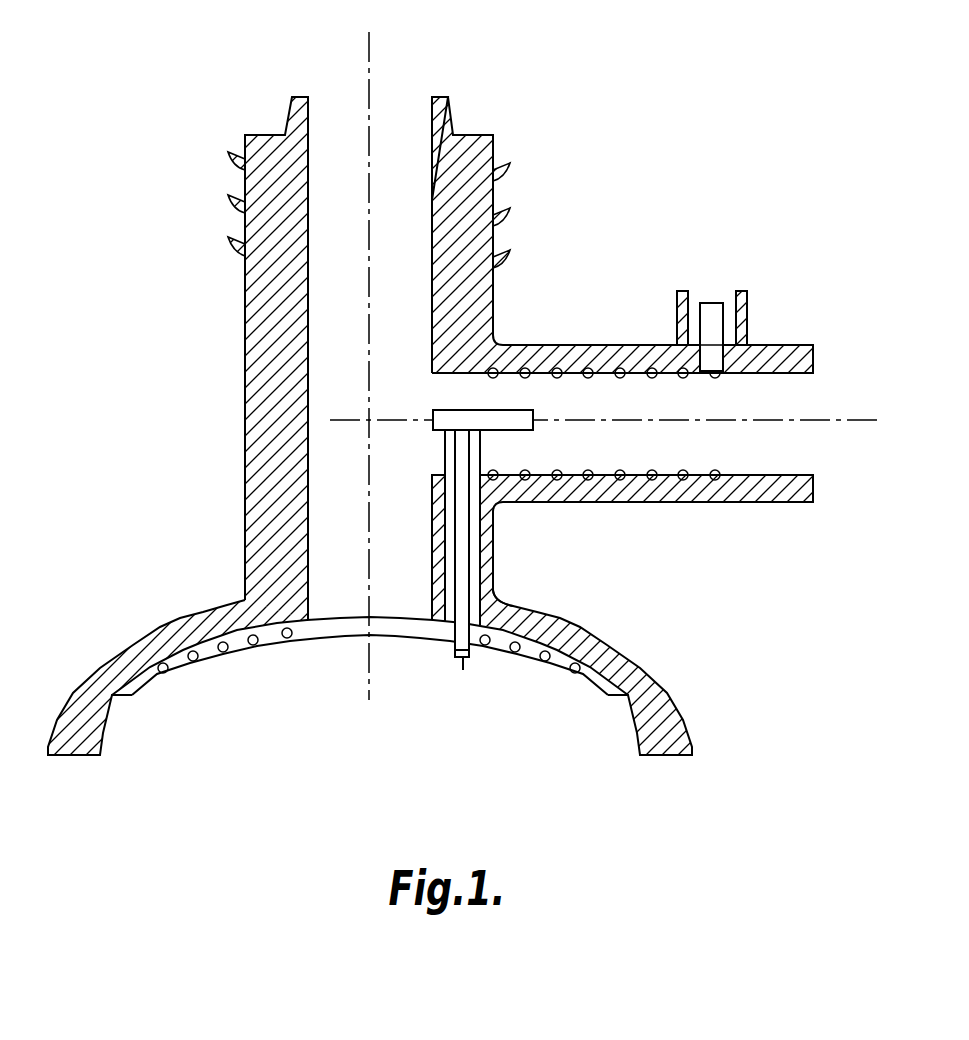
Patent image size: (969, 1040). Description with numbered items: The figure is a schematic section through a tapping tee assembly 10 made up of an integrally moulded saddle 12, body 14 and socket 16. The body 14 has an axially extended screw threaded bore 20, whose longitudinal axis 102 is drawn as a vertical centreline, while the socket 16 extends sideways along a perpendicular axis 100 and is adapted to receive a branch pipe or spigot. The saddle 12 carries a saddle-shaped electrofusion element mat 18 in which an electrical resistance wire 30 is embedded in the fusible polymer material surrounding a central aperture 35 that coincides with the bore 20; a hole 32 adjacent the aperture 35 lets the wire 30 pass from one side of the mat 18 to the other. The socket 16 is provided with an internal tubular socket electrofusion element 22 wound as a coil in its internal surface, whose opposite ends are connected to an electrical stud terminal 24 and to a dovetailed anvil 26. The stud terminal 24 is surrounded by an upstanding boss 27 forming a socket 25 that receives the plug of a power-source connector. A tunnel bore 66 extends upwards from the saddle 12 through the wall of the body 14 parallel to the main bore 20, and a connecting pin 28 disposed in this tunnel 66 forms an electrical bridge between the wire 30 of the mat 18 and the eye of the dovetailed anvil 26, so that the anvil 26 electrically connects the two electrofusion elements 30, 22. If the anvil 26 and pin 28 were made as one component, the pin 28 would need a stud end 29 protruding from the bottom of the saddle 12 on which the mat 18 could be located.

The tapping tee assembly 10 is at (466, 381).
The saddle 12 is at (679, 678).
The body 14 is at (245, 371).
The socket 16 is at (765, 503).
The saddle-shaped electrofusion element mat 18 is at (610, 698).
The bore 20 is at (333, 318).
The socket electrofusion element 22 is at (622, 368).
The electrical stud terminal 24 is at (717, 301).
The socket 25 is at (676, 314).
The dovetailed anvil 26 is at (522, 437).
The upstanding boss 27 is at (743, 291).
The connecting pin 28 is at (469, 552).
The stud end 29 is at (463, 670).
The electrical resistance wire 30 is at (197, 666).
The hole 32 is at (455, 650).
The central aperture 35 is at (322, 639).
The tunnel bore 66 is at (505, 605).
The axis 100 is at (821, 420).
The longitudinal axis 102 is at (371, 47).